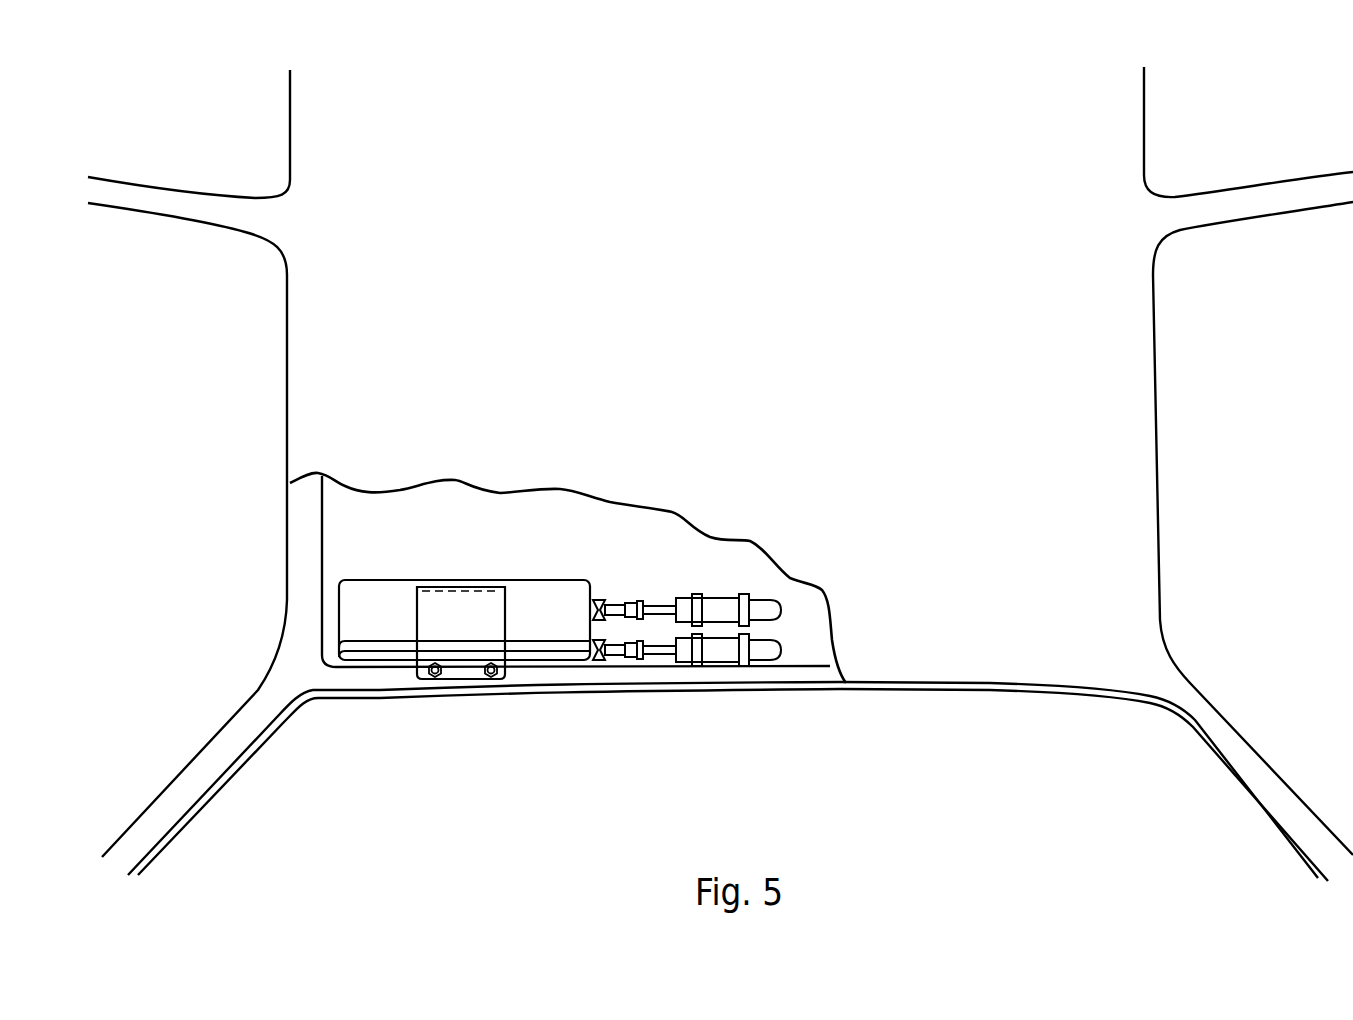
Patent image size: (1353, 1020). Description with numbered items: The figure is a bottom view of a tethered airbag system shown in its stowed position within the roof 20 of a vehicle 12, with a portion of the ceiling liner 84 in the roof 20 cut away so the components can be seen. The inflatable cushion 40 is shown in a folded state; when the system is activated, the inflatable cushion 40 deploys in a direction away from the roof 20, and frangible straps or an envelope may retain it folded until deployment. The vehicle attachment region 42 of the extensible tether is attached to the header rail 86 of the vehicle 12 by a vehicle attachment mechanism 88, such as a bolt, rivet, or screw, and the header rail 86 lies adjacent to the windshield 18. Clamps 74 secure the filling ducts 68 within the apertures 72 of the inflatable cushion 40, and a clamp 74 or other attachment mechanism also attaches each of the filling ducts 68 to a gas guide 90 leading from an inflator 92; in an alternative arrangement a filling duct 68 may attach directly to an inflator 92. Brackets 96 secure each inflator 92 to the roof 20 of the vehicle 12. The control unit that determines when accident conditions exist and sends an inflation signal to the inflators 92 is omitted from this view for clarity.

The vehicle 12 is at (243, 343).
The windshield 18 is at (258, 783).
The roof 20 is at (303, 393).
The inflatable cushion 40 is at (345, 603).
The vehicle attachment region 42 is at (422, 682).
The filling duct 68 is at (628, 600).
The aperture 72 is at (613, 600).
The clamp 74 is at (598, 600).
The ceiling liner 84 is at (734, 320).
The header rail 86 is at (368, 680).
The vehicle attachment mechanism 88 is at (435, 680).
The gas guide 90 is at (669, 598).
The inflator 92 is at (779, 600).
The bracket 96 is at (745, 594).